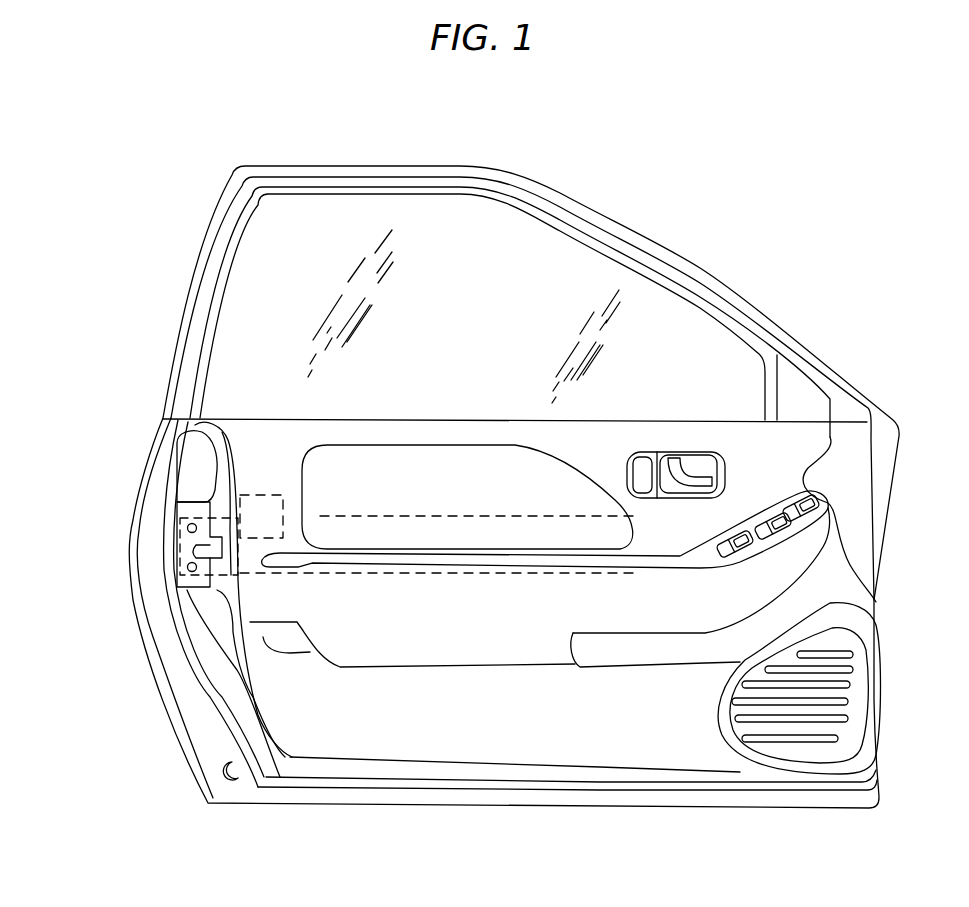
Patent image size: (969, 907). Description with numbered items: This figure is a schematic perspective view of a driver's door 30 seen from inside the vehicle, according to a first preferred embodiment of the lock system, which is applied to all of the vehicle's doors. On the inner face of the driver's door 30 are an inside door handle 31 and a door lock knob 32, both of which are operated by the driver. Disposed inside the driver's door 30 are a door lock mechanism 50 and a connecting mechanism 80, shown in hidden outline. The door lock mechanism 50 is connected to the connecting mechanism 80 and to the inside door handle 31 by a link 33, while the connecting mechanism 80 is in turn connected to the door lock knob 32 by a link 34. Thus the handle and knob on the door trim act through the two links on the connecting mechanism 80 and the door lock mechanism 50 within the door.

The driver's door 30 is at (485, 158).
The inside door handle 31 is at (688, 482).
The door lock knob 32 is at (645, 452).
The link 33 is at (357, 575).
The link 34 is at (320, 516).
The door lock mechanism 50 is at (180, 603).
The connecting mechanism 80 is at (240, 496).